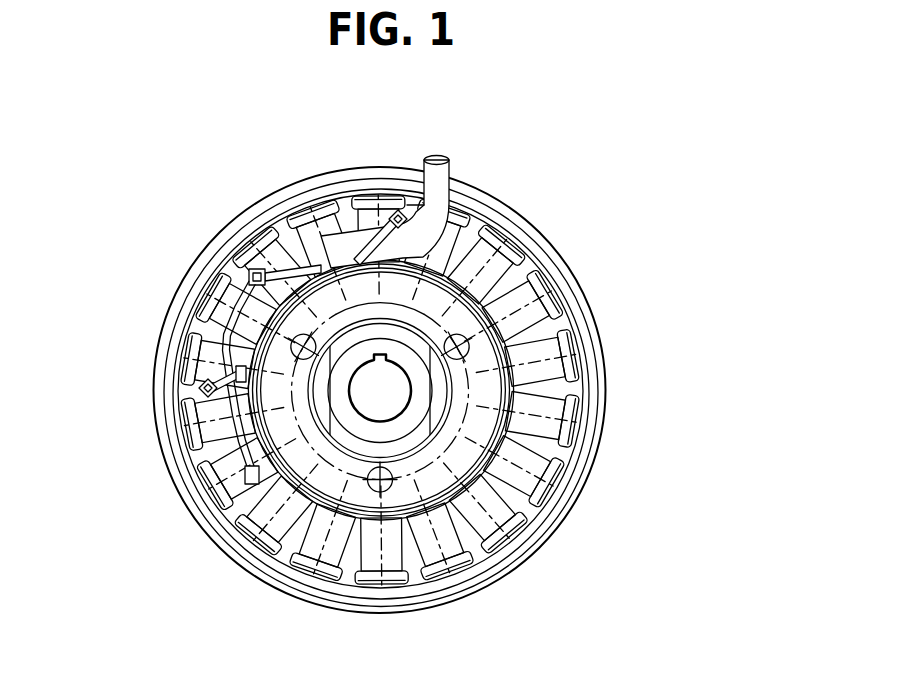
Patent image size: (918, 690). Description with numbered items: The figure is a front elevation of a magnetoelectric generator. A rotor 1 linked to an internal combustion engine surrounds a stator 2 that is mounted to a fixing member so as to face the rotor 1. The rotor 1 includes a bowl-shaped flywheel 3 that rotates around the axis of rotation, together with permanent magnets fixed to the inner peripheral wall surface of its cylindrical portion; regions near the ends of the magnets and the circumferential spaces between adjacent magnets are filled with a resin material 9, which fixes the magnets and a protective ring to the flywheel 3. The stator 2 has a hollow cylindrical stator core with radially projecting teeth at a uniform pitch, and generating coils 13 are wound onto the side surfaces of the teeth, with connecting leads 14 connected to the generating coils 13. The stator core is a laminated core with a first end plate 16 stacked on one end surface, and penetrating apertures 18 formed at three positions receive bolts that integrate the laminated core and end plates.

The rotor 1 is at (536, 545).
The stator 2 is at (458, 320).
The flywheel 3 is at (430, 593).
The resin material 9 is at (336, 186).
The generating coils 13 is at (305, 560).
The connecting leads 14 is at (434, 175).
The first end plate 16 is at (298, 431).
The penetrating apertures 18 is at (292, 345).